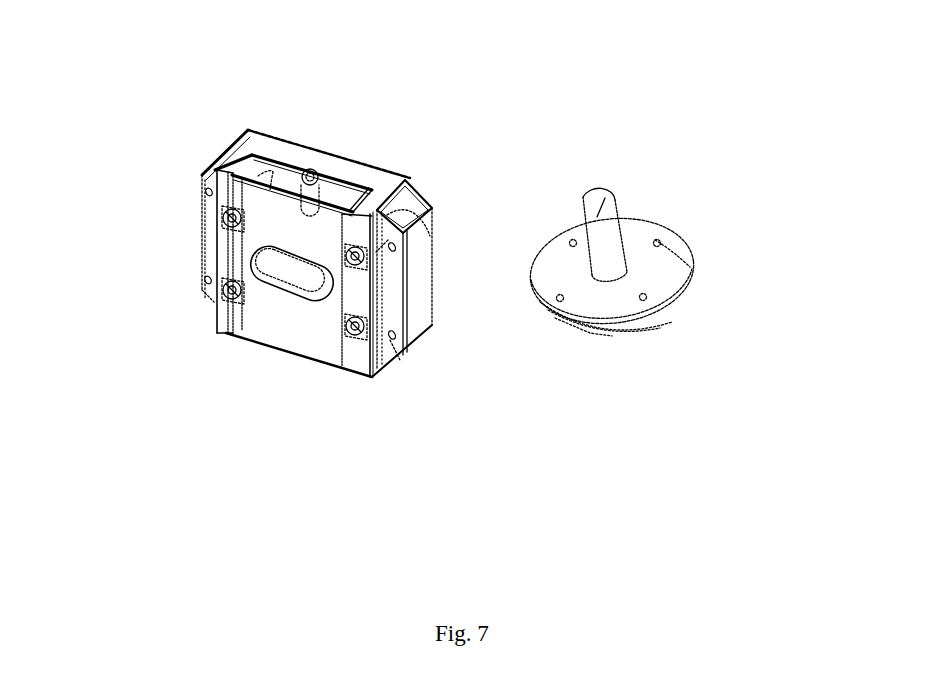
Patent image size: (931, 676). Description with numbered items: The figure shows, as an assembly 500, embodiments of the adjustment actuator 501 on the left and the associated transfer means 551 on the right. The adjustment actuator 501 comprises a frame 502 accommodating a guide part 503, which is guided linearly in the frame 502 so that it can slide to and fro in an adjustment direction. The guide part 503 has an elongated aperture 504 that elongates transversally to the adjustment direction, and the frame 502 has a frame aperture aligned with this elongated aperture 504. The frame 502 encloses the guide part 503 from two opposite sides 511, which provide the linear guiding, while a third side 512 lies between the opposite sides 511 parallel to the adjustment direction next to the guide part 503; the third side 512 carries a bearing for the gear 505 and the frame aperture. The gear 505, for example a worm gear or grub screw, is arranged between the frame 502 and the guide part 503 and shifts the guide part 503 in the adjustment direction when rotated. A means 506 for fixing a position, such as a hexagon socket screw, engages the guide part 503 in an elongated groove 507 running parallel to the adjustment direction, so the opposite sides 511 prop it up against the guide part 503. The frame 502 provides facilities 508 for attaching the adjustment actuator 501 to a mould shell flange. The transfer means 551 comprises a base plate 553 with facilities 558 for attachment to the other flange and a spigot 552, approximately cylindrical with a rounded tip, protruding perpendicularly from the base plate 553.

The knob assembly 500 is at (664, 45).
The adjustment actuator 501 is at (202, 132).
The frame 502 is at (256, 173).
The guide part 503 is at (305, 337).
The elongated aperture 504 is at (292, 275).
The gear 505 is at (351, 200).
The means for fixing a position 506 is at (437, 236).
The elongated groove 507 is at (249, 127).
The facilities for attachment 508 is at (212, 300).
The opposite sides 511 is at (202, 207).
The third side 512 is at (310, 177).
The transfer means 551 is at (574, 175).
The spigot 552 is at (616, 207).
The base plate 553 is at (667, 233).
The facilities for attachment 558 is at (690, 267).